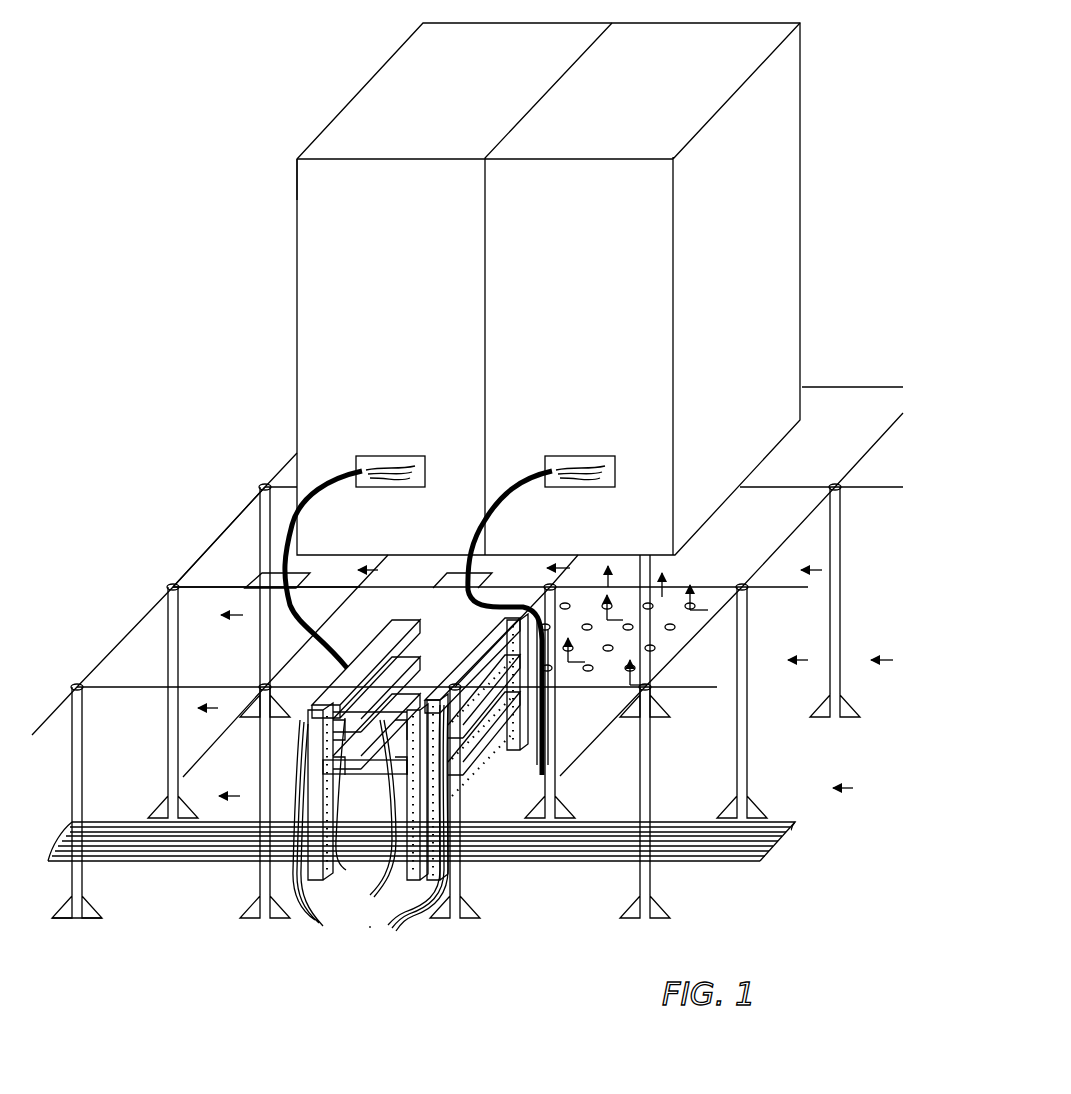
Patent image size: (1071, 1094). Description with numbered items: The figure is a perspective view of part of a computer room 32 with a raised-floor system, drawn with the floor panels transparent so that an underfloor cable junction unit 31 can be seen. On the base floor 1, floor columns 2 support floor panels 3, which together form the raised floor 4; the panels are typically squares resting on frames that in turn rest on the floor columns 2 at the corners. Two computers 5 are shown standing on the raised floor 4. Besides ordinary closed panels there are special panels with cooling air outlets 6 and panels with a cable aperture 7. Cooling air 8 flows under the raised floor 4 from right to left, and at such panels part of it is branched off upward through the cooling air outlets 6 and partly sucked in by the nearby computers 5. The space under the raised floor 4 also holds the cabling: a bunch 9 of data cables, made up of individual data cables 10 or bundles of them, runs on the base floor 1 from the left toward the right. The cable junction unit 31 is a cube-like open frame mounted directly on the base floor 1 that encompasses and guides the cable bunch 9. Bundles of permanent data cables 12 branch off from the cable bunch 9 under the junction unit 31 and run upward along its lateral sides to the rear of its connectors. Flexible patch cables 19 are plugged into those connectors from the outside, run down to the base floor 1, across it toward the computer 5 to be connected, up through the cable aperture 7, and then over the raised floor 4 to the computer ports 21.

The base floor 1 is at (170, 969).
The floor columns 2 is at (170, 732).
The floor panels 3 is at (229, 579).
The raised floor 4 is at (186, 526).
The computers 5 is at (393, 308).
The cooling air outlets 6 is at (672, 628).
The cable aperture 7 is at (303, 581).
The cooling air 8 is at (862, 742).
The bunches of data cables 9 is at (505, 862).
The individual data cables 10 is at (472, 635).
The bundles of permanent data cables 12 is at (350, 868).
The patch cables 19 is at (497, 607).
The computer ports 21 is at (383, 475).
The underfloor cable junction unit 31 is at (370, 930).
The computer room 32 is at (188, 251).